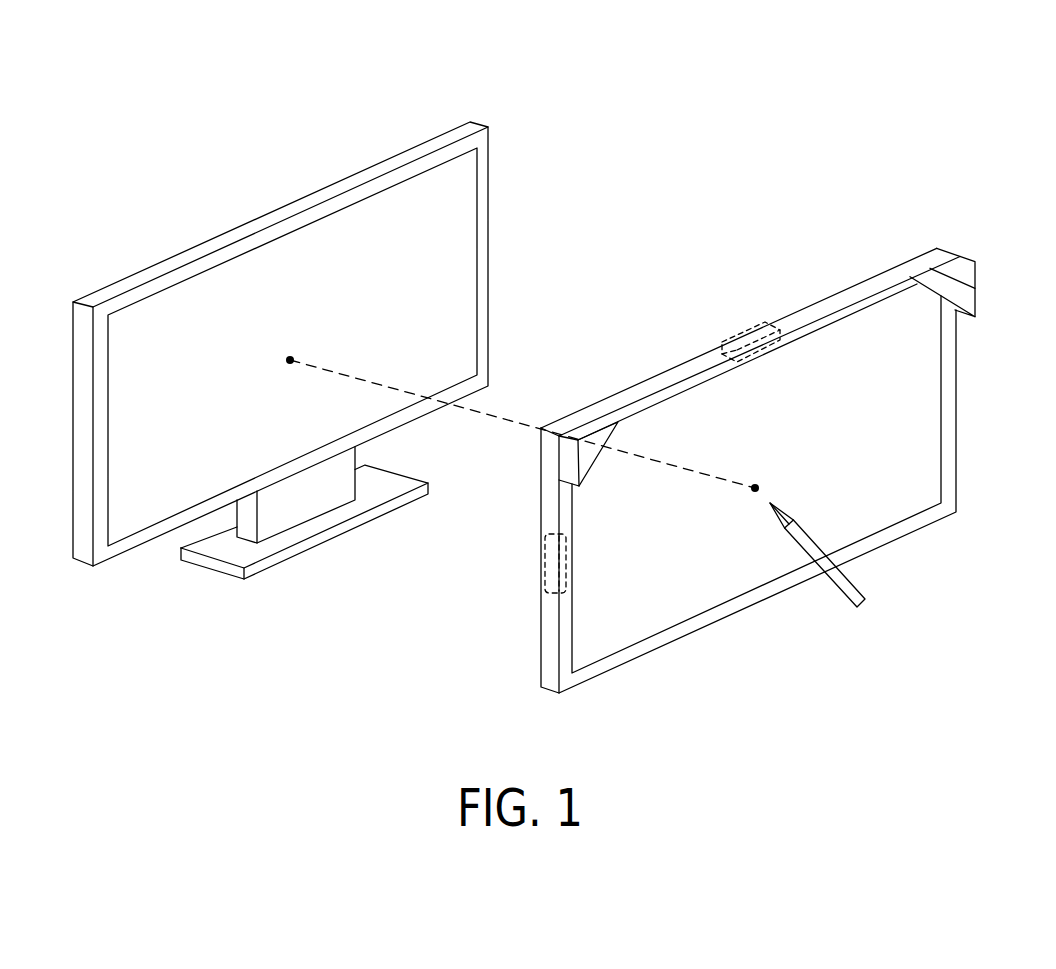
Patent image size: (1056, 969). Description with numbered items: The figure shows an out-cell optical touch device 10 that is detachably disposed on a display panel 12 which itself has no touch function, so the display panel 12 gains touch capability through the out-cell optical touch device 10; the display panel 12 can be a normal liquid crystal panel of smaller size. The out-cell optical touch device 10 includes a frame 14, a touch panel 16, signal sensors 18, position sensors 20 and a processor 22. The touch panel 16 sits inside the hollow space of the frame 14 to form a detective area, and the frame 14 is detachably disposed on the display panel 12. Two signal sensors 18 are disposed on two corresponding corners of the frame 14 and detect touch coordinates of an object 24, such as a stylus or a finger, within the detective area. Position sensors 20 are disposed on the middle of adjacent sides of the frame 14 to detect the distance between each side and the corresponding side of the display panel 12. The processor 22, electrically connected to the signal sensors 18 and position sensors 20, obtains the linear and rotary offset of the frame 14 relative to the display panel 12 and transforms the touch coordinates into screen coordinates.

The out-cell optical touch device 10 is at (901, 100).
The display panel 12 is at (485, 175).
The frame 14 is at (781, 470).
The touch panel 16 is at (930, 366).
The signal sensor 18 is at (592, 428).
The position sensor 20 is at (545, 570).
The processor 22 is at (972, 272).
The object 24 is at (866, 602).